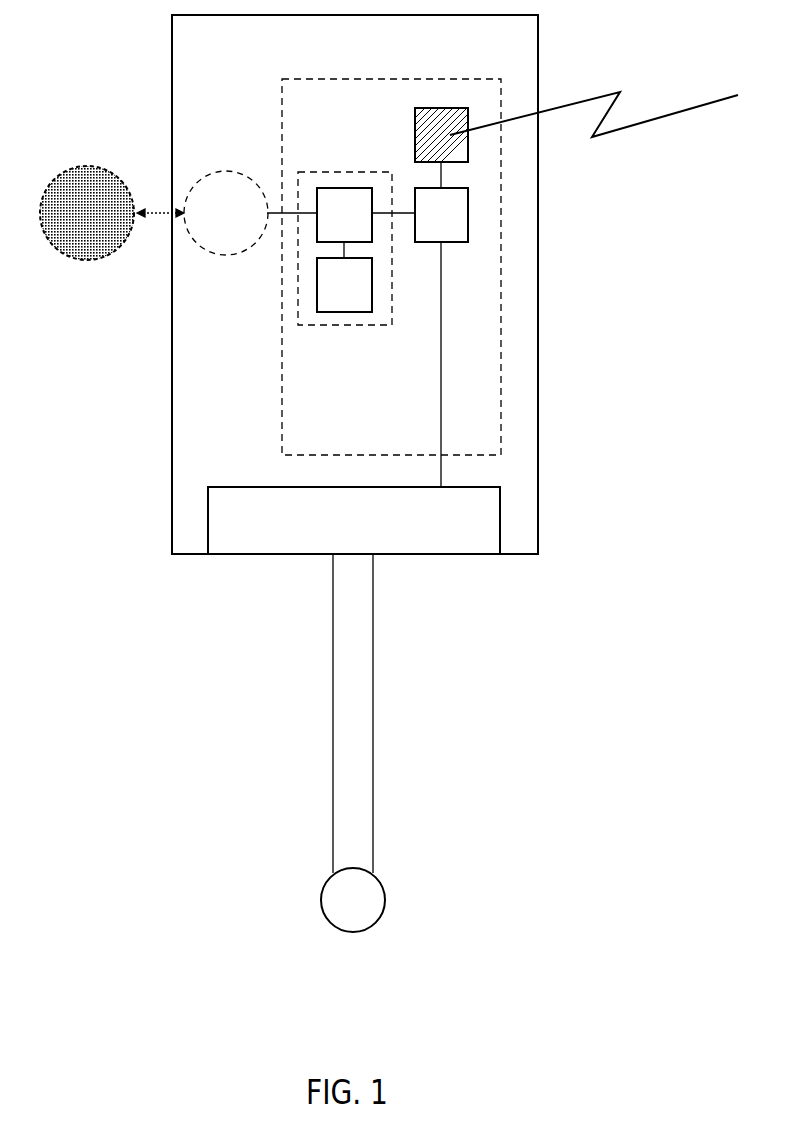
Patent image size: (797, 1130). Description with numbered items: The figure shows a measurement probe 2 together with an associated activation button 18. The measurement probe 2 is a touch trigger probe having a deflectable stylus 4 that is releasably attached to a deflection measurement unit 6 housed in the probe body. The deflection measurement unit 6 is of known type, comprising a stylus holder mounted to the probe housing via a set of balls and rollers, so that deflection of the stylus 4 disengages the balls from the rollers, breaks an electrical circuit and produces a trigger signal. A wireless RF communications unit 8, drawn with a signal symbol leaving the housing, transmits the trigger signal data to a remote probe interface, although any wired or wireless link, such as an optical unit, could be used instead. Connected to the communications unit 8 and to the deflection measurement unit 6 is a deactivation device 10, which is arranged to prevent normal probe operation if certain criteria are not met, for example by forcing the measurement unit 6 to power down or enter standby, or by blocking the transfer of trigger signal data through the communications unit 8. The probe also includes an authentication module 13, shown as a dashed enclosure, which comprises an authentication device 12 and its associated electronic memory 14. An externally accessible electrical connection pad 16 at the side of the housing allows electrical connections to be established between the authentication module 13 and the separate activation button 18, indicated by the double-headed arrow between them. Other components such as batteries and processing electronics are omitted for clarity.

The measurement probe 2 is at (395, 749).
The deflectable stylus 4 is at (374, 724).
The deflection measurement unit 6 is at (346, 534).
The wireless communications unit 8 is at (415, 136).
The deactivation device 10 is at (428, 226).
The authentication device 12 is at (331, 226).
The authentication module 13 is at (341, 274).
The electronic memory 14 is at (331, 296).
The electrical connection pad 16 is at (215, 226).
The activation button 18 is at (86, 262).